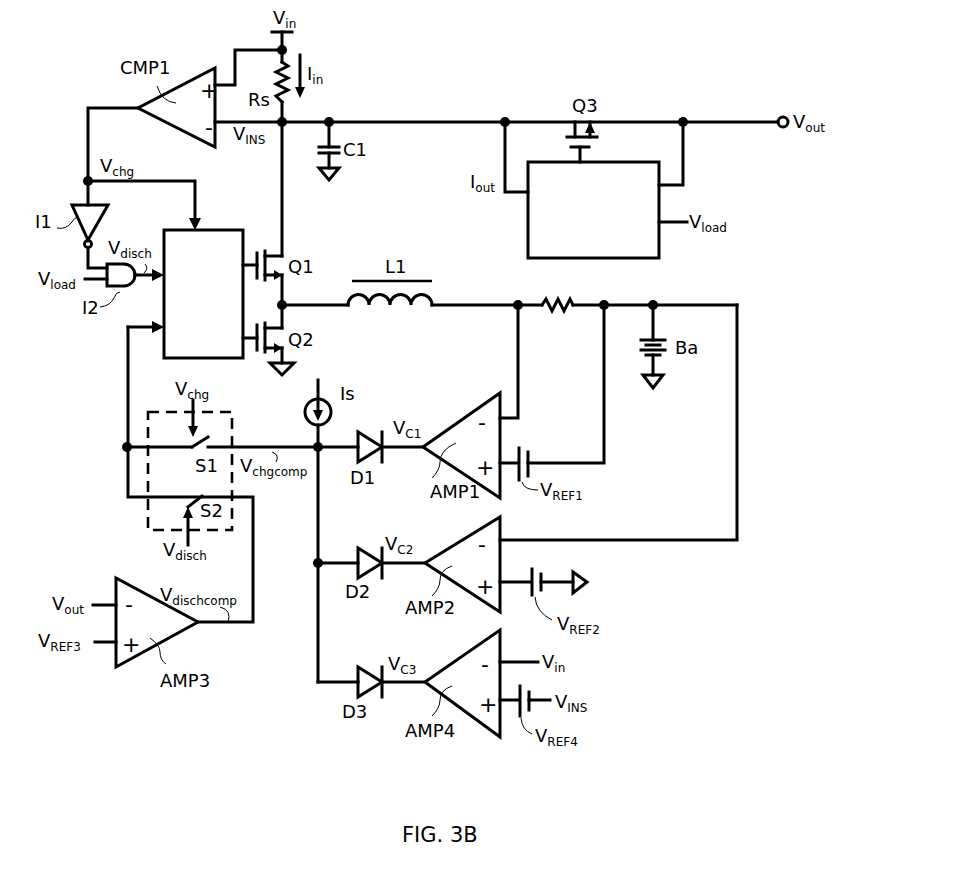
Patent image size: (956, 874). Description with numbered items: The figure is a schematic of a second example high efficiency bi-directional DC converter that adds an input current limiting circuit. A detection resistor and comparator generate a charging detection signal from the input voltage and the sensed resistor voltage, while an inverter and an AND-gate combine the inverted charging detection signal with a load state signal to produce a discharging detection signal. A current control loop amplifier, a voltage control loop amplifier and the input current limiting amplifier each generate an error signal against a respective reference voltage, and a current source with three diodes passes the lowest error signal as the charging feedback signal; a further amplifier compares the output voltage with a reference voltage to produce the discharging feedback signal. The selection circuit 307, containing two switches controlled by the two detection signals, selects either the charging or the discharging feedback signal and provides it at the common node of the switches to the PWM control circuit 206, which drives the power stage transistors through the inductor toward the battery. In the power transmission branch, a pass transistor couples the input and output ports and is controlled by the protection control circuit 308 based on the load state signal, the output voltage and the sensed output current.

The PWM control circuit 206 is at (203, 294).
The selection circuit 307 is at (148, 512).
The protection control circuit 308 is at (593, 210).